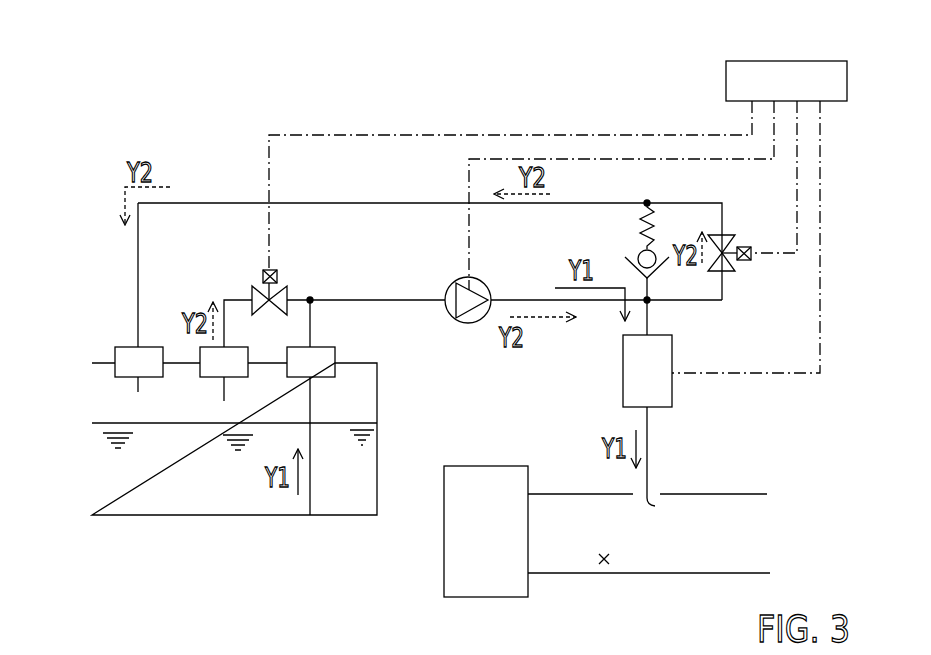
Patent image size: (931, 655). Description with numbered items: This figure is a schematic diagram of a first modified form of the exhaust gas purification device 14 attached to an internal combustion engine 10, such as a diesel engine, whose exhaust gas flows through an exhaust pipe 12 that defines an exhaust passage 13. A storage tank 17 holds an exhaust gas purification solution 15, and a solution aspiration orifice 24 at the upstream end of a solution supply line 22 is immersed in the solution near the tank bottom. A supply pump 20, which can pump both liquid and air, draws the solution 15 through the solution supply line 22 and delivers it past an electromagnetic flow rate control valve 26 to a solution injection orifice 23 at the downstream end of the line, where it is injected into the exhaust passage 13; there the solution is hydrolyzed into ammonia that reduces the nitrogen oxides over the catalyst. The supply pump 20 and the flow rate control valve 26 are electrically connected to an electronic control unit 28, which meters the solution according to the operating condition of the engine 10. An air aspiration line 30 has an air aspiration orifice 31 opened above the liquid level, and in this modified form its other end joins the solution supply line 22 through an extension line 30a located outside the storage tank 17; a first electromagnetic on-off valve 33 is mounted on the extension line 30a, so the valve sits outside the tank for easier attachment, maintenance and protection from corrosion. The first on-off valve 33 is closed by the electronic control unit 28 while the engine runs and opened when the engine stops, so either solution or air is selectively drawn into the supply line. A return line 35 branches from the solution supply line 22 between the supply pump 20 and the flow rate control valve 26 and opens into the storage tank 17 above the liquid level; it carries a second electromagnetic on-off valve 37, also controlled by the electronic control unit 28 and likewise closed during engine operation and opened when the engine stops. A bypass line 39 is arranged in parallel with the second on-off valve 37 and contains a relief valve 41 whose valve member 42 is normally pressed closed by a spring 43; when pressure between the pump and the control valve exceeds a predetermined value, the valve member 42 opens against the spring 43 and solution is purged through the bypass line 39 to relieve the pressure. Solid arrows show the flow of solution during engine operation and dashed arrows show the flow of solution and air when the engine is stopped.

The internal combustion engine 10 is at (483, 478).
The exhaust pipe 12 is at (707, 492).
The exhaust passage 13 is at (605, 565).
The exhaust gas purification device 14 is at (219, 168).
The exhaust gas purification solution 15 is at (230, 490).
The storage tank 17 is at (92, 380).
The supply pump 20 is at (491, 281).
The solution supply line 22 is at (400, 299).
The solution injection orifice 23 is at (655, 506).
The solution aspiration orifice 24 is at (310, 517).
The electromagnetic flow rate control valve 26 is at (619, 363).
The electronic control unit 28 is at (815, 60).
The air aspiration line 30 is at (218, 399).
The extension line 30a is at (229, 298).
The air aspiration orifice 31 is at (224, 403).
The first electromagnetic on-off valve 33 is at (282, 285).
The return line 35 is at (133, 243).
The second electromagnetic on-off valve 37 is at (736, 272).
The bypass line 39 is at (649, 288).
The relief valve 41 is at (665, 176).
The valve member 42 is at (656, 251).
The spring 43 is at (648, 240).